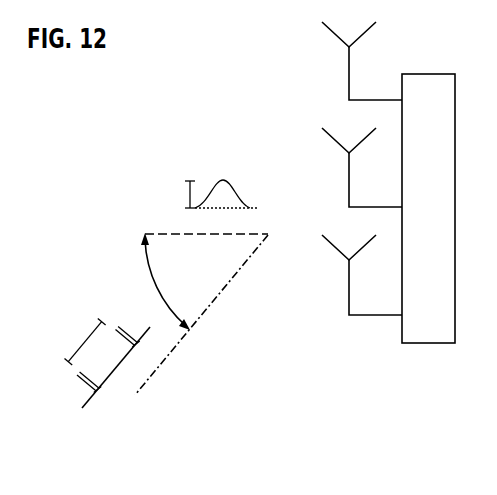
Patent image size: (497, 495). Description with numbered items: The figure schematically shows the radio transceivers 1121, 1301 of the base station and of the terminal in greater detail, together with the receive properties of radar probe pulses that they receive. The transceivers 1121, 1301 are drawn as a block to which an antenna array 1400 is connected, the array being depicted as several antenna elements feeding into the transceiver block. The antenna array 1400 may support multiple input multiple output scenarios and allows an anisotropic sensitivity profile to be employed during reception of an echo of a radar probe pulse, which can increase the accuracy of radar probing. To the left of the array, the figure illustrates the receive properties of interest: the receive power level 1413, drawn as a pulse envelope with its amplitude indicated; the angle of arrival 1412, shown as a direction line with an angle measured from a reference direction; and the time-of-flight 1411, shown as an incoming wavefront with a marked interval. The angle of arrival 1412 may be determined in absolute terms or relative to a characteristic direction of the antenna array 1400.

The time-of-flight 1411 is at (100, 422).
The angle of arrival 1412 is at (232, 310).
The receive power level 1413 is at (232, 160).
The antenna array 1400 is at (370, 357).
The radio transceiver 1121 is at (403, 275).
The radio transceiver 1301 is at (395, 425).